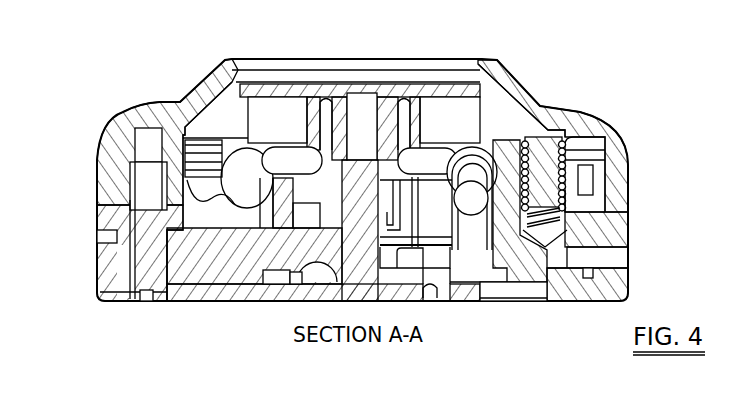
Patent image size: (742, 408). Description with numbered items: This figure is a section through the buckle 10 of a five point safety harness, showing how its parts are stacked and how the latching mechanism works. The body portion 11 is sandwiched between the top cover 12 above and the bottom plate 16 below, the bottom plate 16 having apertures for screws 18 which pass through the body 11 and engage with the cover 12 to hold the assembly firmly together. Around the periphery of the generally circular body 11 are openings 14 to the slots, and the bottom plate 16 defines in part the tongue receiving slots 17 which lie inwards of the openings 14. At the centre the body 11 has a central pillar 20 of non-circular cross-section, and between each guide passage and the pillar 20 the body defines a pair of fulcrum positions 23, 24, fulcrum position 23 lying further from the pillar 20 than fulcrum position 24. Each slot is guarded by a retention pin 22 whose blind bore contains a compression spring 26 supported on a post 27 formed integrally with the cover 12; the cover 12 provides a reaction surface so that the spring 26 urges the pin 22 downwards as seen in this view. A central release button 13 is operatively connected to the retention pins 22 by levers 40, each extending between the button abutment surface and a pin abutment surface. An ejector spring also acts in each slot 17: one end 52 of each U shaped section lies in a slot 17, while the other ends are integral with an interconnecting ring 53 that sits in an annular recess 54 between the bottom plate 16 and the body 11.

The buckle 10 is at (543, 76).
The body portion 11 is at (628, 232).
The top cover 12 is at (165, 113).
The central release button 13 is at (306, 84).
The openings 14 is at (597, 258).
The bottom plate 16 is at (105, 262).
The tongue receiving slots 17 is at (600, 255).
The screws 18 is at (113, 301).
The central pillar 20 is at (345, 300).
The retention pin 22 is at (607, 192).
The fulcrum position 23 is at (170, 300).
The fulcrum position 24 is at (222, 284).
The compression spring 26 is at (183, 150).
The post 27 is at (547, 160).
The lever 40 is at (443, 170).
The end of spring section 52 is at (482, 302).
The interconnecting ring 53 is at (452, 302).
The annular recess 54 is at (285, 284).